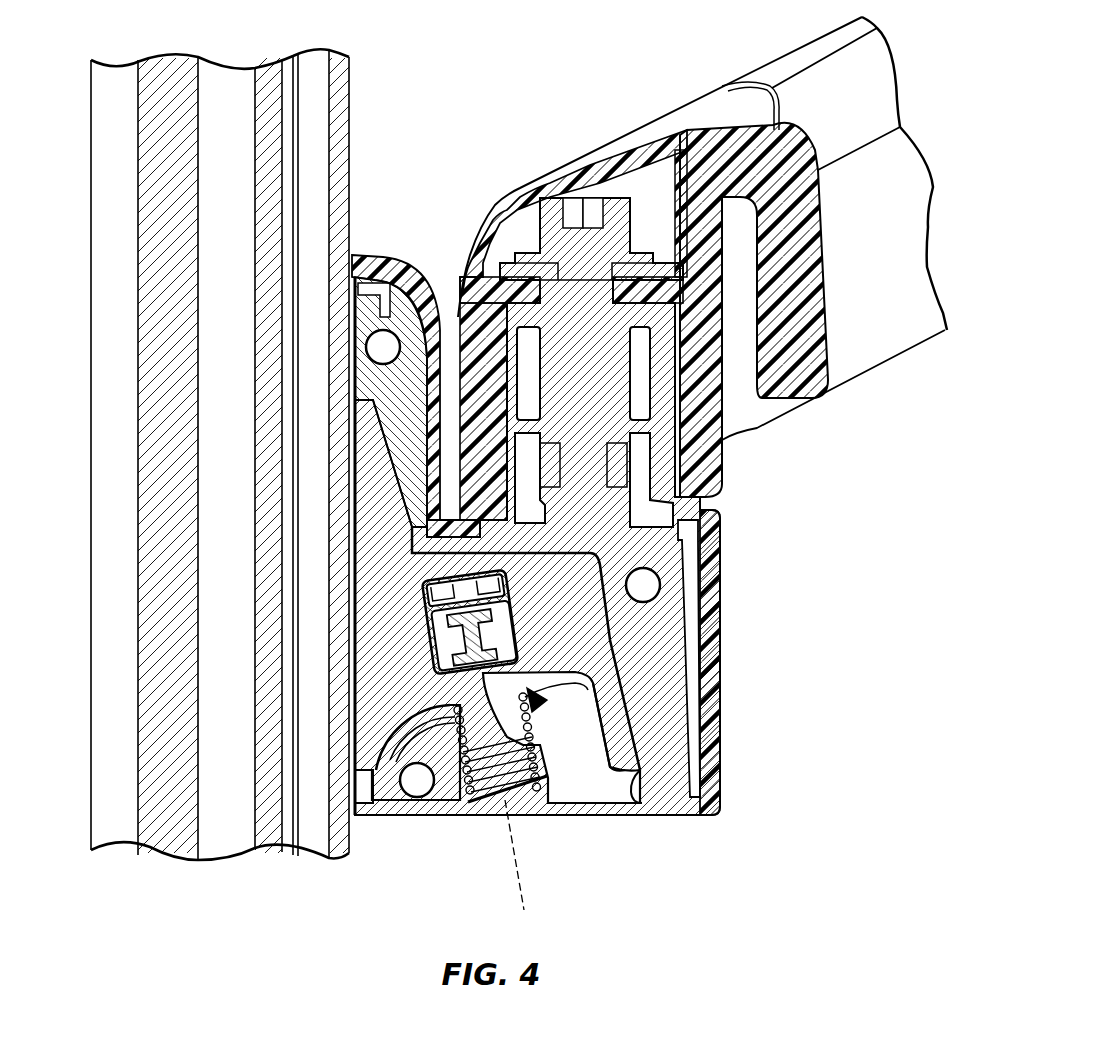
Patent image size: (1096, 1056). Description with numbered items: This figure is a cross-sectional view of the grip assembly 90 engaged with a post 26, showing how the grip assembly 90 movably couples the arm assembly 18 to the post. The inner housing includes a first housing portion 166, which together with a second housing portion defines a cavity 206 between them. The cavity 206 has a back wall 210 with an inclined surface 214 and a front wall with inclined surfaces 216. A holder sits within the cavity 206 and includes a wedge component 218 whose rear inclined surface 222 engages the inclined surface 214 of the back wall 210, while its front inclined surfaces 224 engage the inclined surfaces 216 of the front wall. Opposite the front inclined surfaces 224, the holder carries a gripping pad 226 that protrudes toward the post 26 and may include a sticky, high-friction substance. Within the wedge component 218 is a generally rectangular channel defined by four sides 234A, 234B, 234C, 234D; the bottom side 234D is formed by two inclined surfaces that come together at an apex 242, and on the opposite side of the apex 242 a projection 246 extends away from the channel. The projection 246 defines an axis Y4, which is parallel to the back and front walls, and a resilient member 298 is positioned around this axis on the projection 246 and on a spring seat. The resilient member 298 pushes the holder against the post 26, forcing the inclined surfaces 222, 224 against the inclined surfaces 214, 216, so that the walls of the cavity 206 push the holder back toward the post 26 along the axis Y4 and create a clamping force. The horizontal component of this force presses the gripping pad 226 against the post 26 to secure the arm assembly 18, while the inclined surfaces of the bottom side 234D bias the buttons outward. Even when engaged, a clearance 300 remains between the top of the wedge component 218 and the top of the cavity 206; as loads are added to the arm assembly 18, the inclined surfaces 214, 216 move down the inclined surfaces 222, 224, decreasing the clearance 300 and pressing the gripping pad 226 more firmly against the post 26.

The arm assembly 18 is at (664, 70).
The post 26 is at (115, 425).
The grip assembly 90 is at (702, 903).
The first housing portion 166 is at (665, 548).
The cavity 206 is at (597, 790).
The back wall 210 is at (647, 849).
The inclined surface 214 is at (638, 797).
The inclined surfaces 216 is at (373, 357).
The wedge component 218 is at (580, 625).
The rear inclined surface 222 is at (625, 667).
The front inclined surfaces 224 is at (378, 437).
The gripping pad 226 is at (443, 290).
The side of channel 234A is at (660, 580).
The side of channel 234B is at (420, 580).
The side of channel 234C is at (422, 592).
The bottom side of channel 234D is at (590, 700).
The apex 242 is at (527, 805).
The projection 246 is at (417, 800).
The resilient member 298 is at (487, 805).
The clearance 300 is at (400, 515).
The axis Y4 is at (508, 867).